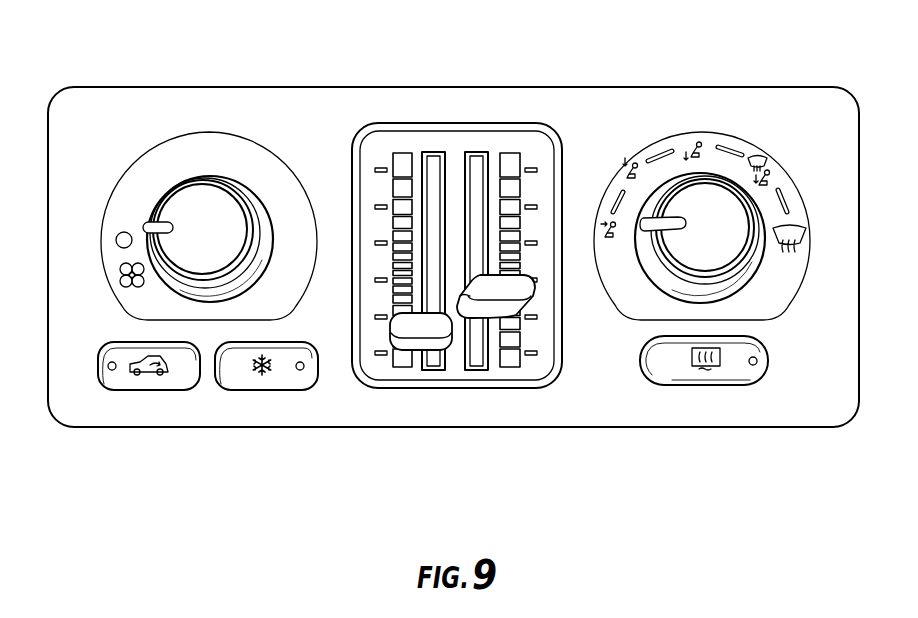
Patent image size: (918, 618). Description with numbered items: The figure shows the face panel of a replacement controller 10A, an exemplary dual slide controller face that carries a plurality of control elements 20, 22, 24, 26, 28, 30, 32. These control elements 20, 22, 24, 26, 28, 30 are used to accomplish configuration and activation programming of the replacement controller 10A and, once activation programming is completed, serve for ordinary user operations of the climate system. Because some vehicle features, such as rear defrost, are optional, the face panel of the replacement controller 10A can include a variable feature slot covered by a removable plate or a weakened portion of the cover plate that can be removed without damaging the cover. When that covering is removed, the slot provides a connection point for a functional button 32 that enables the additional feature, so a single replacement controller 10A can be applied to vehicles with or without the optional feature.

The replacement controller 10A is at (181, 68).
The control element 20 is at (100, 213).
The control element 22 is at (420, 353).
The control element 24 is at (492, 321).
The control element 26 is at (706, 129).
The control element 28 is at (148, 385).
The control element 30 is at (263, 385).
The functional button 32 is at (705, 380).